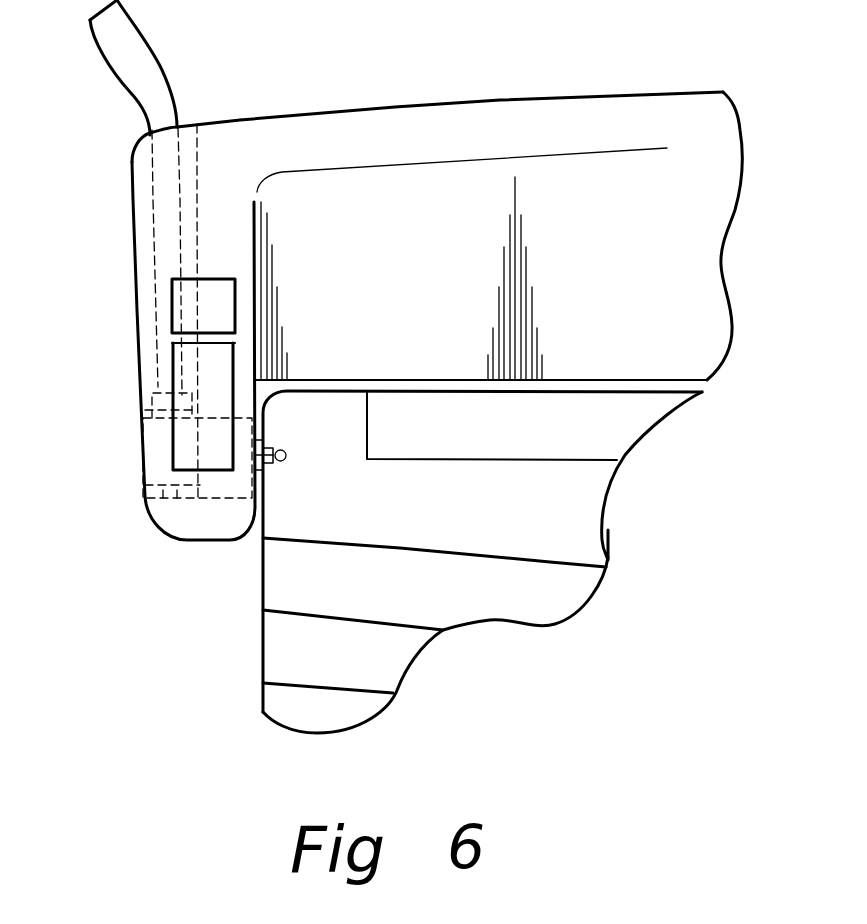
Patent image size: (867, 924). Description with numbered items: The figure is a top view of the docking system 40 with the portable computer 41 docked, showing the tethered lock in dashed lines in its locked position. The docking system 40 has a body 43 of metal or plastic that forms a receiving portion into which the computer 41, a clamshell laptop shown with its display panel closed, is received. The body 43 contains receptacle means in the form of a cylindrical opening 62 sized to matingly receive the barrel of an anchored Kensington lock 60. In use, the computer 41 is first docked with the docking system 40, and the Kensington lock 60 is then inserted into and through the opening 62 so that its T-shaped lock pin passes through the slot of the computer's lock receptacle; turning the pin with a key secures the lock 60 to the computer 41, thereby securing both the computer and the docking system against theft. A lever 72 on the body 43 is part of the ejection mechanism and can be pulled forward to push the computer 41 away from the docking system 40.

The docking system 40 is at (393, 107).
The portable computer 41 is at (567, 510).
The body 43 is at (660, 127).
The Kensington lock 60 is at (158, 465).
The opening 62 is at (138, 487).
The lever 72 is at (245, 355).